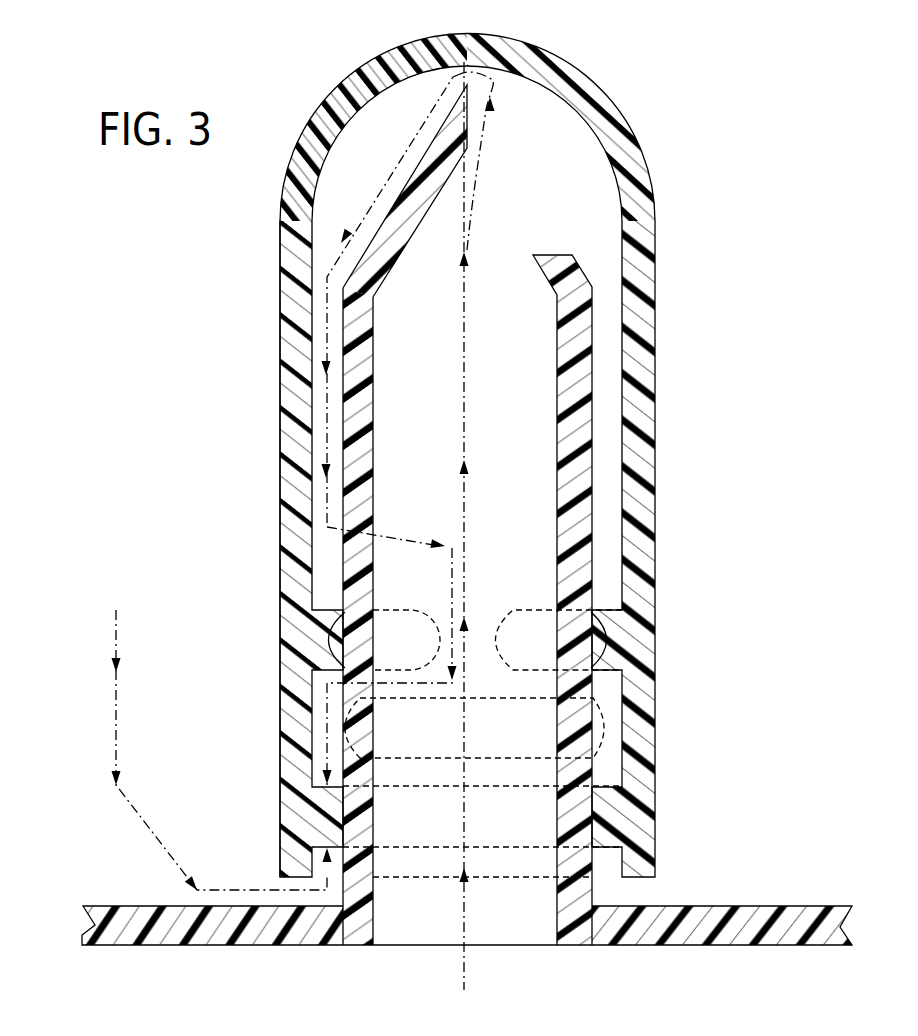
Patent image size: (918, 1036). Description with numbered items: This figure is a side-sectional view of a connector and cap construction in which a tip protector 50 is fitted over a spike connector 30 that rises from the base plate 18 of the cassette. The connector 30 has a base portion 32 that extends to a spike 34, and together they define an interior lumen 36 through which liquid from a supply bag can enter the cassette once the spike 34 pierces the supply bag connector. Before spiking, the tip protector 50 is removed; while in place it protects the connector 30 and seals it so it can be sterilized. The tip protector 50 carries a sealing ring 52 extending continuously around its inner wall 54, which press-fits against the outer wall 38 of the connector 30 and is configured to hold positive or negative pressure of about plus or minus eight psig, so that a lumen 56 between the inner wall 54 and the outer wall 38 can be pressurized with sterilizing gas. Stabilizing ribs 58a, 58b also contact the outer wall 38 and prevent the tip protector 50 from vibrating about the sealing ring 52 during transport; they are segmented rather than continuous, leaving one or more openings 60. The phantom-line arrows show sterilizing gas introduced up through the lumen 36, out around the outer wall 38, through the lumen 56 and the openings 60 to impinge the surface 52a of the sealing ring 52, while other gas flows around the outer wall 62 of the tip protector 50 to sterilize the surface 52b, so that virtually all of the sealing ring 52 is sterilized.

The base plate 18 is at (82, 935).
The spike connector 30 is at (327, 285).
The base portion 32 is at (355, 494).
The spike 34 is at (410, 240).
The interior lumen 36 is at (531, 489).
The outer wall 38 is at (343, 417).
The tip protector 50 is at (365, 52).
The sealing ring 52 is at (318, 800).
The surface of sealing ring 52a is at (600, 773).
The surface of sealing ring 52b is at (597, 876).
The inner wall 54 is at (620, 200).
The lumen 56 is at (608, 425).
The stabilizing rib 58a is at (400, 610).
The stabilizing rib 58b is at (600, 721).
The opening 60 is at (483, 640).
The outer wall 62 is at (280, 580).